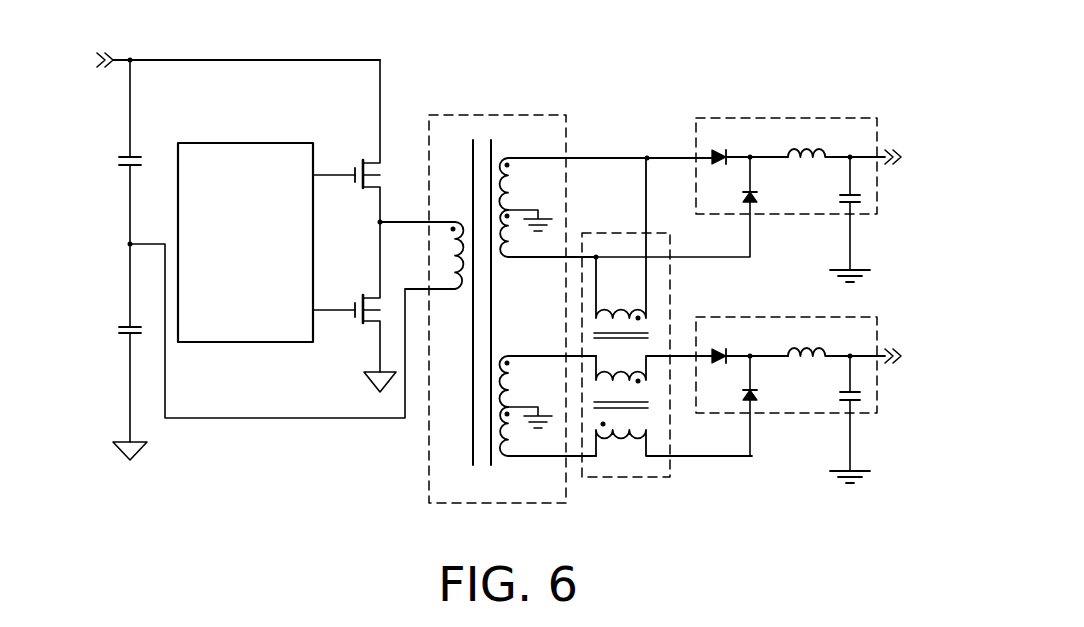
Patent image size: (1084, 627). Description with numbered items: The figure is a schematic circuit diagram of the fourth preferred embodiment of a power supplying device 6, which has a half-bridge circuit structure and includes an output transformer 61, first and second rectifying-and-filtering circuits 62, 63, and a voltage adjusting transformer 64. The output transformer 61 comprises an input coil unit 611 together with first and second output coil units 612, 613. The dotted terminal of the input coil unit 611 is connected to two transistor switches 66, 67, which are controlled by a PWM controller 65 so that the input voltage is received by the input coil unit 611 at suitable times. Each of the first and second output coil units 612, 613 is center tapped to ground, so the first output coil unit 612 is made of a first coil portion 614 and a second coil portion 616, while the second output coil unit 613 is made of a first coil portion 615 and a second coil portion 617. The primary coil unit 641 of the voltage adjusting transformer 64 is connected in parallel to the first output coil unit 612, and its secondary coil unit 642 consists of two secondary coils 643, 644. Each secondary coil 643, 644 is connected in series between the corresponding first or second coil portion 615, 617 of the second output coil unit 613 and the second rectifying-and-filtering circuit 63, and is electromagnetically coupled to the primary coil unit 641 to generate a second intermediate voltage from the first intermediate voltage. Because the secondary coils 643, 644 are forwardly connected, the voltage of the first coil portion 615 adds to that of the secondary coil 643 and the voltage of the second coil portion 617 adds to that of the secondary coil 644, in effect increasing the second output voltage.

The power supplying device 6 is at (659, 98).
The output transformer 61 is at (549, 113).
The input coil unit 611 is at (440, 240).
The first output coil unit 612 is at (500, 148).
The second output coil unit 613 is at (500, 464).
The first coil portion 614 is at (513, 187).
The first coil portion 615 is at (512, 380).
The second coil portion 616 is at (513, 236).
The second coil portion 617 is at (512, 438).
The first rectifying-and-filtering circuit 62 is at (857, 116).
The second rectifying-and-filtering circuit 63 is at (857, 316).
The voltage adjusting transformer 64 is at (626, 232).
The primary coil unit 641 is at (620, 322).
The secondary coil unit 642 is at (592, 405).
The secondary coil 643 is at (645, 392).
The secondary coil 644 is at (645, 418).
The PWM controller 65 is at (232, 142).
The transistor switch 66 is at (367, 160).
The transistor switch 67 is at (367, 296).